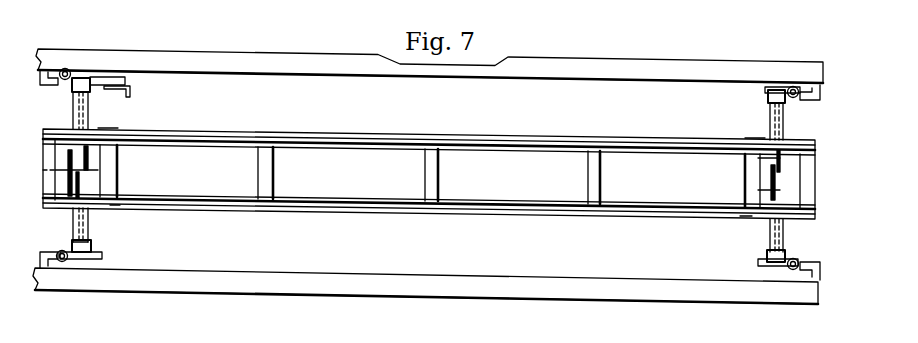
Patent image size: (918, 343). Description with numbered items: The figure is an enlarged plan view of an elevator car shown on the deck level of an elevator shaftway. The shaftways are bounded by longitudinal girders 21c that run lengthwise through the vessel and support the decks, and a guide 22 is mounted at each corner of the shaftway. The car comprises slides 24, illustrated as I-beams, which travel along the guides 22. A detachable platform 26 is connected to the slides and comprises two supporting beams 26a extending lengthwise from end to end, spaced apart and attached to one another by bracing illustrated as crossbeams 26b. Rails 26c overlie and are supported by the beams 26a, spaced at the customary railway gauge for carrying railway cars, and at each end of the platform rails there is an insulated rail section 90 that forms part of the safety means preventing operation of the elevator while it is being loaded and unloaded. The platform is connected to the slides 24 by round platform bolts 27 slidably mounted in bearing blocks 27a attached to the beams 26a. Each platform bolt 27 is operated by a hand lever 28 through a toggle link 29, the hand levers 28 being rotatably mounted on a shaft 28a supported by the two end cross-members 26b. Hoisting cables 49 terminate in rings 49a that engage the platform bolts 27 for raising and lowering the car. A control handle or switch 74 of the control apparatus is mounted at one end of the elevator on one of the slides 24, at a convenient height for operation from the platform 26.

The longitudinal girder 21c is at (279, 52).
The guide 22 is at (50, 68).
The slide 24 is at (78, 70).
The platform 26 is at (429, 169).
The supporting beam 26a is at (308, 137).
The crossbeam 26b is at (425, 170).
The rail 26c is at (400, 140).
The platform bolt 27 is at (95, 95).
The bearing block 27a is at (88, 238).
The hand lever 28 is at (100, 170).
The shaft 28a is at (70, 206).
The toggle link 29 is at (90, 151).
The hoisting cable 49 is at (90, 80).
The ring 49a is at (110, 78).
The control handle or switch 74 is at (130, 89).
The rail section 90 is at (98, 128).